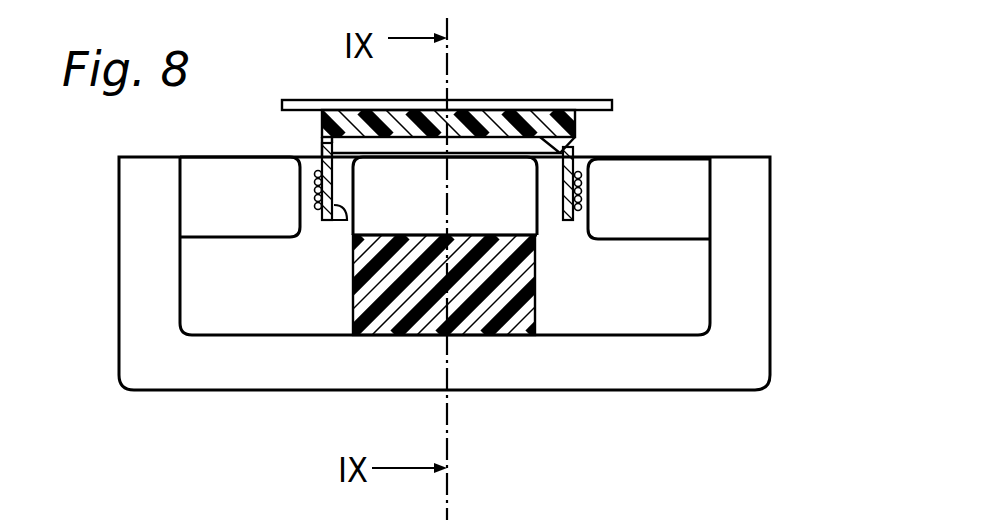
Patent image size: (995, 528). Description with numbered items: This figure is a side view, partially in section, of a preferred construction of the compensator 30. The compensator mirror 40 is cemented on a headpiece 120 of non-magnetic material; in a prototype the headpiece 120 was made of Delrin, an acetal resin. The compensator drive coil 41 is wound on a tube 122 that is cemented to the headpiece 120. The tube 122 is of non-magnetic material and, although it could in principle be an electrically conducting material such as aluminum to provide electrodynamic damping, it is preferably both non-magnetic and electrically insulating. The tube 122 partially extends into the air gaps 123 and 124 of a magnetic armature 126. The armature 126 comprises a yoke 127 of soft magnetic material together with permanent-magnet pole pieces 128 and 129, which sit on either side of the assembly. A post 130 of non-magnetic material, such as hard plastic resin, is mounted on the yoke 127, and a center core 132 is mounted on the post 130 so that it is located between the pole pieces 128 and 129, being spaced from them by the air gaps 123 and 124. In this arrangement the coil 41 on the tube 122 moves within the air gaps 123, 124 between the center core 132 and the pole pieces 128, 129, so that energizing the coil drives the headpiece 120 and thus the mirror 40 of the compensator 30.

The compensator 30 is at (244, 321).
The compensator mirror 40 is at (590, 99).
The compensator drive coil 41 is at (582, 222).
The headpiece 120 is at (322, 116).
The tube 122 is at (340, 223).
The air gap 123 is at (314, 168).
The air gap 124 is at (585, 170).
The magnetic armature 126 is at (136, 298).
The yoke 127 is at (347, 388).
The permanent-magnet pole piece 128 is at (252, 236).
The permanent-magnet pole piece 129 is at (683, 240).
The post 130 is at (353, 312).
The center core 132 is at (411, 211).